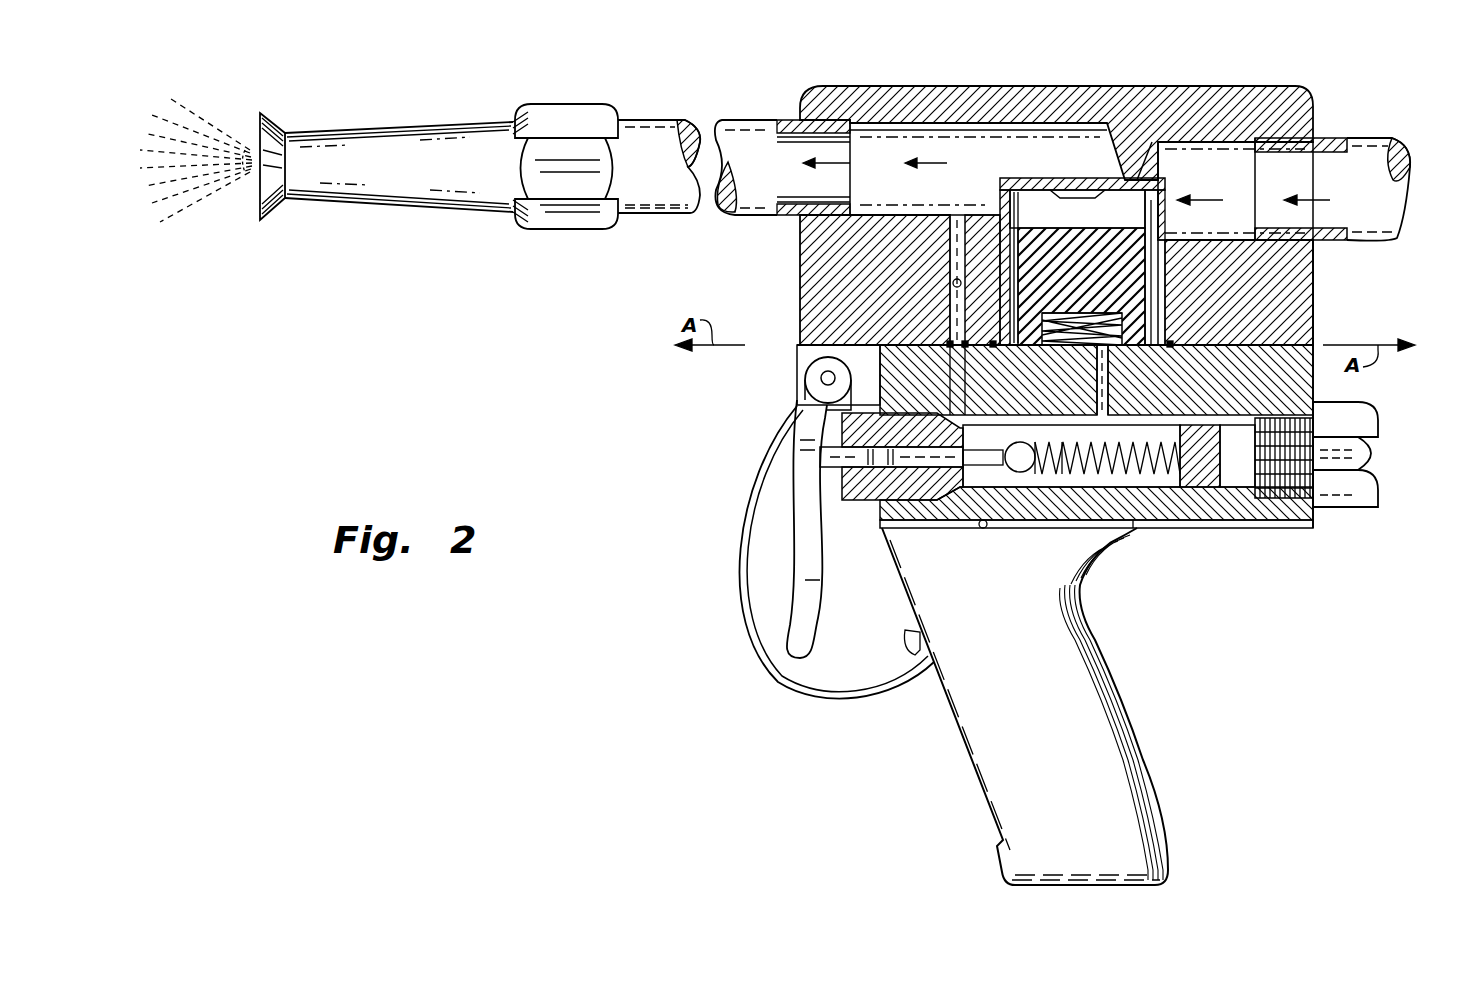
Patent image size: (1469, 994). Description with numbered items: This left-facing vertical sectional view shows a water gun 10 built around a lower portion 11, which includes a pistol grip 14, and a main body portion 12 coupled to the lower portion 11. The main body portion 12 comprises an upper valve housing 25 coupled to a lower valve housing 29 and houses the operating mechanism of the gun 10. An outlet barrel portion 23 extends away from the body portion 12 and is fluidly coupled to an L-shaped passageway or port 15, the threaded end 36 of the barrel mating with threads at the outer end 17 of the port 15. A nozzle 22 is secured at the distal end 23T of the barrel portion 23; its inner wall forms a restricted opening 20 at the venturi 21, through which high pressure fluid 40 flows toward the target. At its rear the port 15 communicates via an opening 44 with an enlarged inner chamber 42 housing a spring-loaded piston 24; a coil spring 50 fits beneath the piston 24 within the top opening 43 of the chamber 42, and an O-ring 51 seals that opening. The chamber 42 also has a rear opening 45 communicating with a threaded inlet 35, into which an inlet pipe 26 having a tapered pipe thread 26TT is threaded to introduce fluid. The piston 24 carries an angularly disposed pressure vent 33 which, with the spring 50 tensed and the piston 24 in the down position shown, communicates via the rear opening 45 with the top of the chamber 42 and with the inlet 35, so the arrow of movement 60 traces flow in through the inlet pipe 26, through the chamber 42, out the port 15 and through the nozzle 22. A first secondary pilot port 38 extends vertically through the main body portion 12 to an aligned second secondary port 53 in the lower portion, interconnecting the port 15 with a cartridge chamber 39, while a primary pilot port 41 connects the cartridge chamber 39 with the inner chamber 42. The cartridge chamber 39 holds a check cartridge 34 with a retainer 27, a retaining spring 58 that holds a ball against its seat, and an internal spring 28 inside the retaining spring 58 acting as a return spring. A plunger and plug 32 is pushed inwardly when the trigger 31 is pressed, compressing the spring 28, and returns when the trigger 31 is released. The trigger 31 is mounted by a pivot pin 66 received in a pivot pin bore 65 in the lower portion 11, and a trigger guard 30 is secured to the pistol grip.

The water gun 10 is at (496, 386).
The lower portion 11 is at (1152, 684).
The main body portion 12 is at (1243, 66).
The pistol grip 14 is at (990, 793).
The L-shaped passageway or port 15 is at (991, 163).
The outer end of port 17 is at (803, 118).
The restricted opening 20 is at (258, 157).
The venturi 21 is at (258, 195).
The nozzle 22 is at (383, 104).
The outlet barrel portion 23 is at (653, 130).
The distal end of barrel portion 23T is at (620, 213).
The piston 24 is at (1253, 273).
The upper valve housing 25 is at (880, 95).
The inlet pipe 26 is at (1393, 137).
The tapered pipe thread 26TT is at (1265, 230).
The retainer 27 is at (1362, 453).
The internal spring 28 is at (1140, 483).
The lower valve housing 29 is at (1287, 520).
The trigger guard 30 is at (838, 694).
The trigger 31 is at (793, 630).
The plunger and plug 32 is at (847, 458).
The pressure vent 33 is at (1207, 303).
The check cartridge 34 is at (1013, 490).
The threaded inlet 35 is at (1315, 136).
The threaded end 36 is at (817, 120).
The first secondary pilot port 38 is at (957, 292).
The cartridge chamber 39 is at (1122, 530).
The high pressure fluid 40 is at (187, 110).
The primary pilot port 41 is at (1108, 383).
The inner chamber 42 is at (1142, 200).
The top opening 43 is at (1195, 305).
The opening 44 is at (1102, 184).
The rear opening 45 is at (1150, 210).
The coil spring 50 is at (1085, 355).
The O-ring 51 is at (984, 346).
The second secondary port 53 is at (957, 383).
The retaining spring 58 is at (1083, 578).
The arrow of movement 60 is at (947, 163).
The pivot pin bore 65 is at (833, 386).
The pivot pin 66 is at (827, 378).